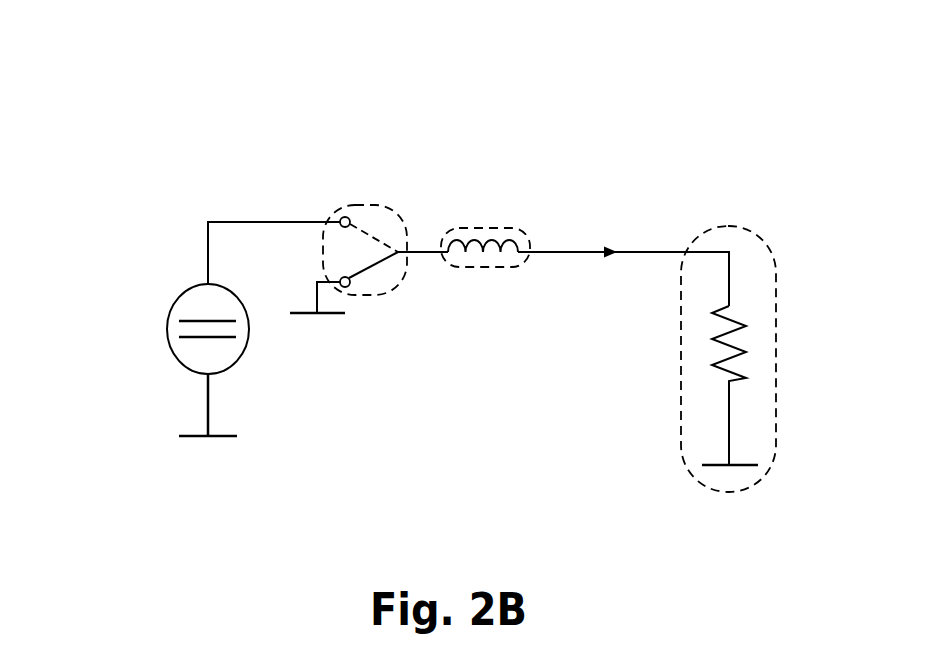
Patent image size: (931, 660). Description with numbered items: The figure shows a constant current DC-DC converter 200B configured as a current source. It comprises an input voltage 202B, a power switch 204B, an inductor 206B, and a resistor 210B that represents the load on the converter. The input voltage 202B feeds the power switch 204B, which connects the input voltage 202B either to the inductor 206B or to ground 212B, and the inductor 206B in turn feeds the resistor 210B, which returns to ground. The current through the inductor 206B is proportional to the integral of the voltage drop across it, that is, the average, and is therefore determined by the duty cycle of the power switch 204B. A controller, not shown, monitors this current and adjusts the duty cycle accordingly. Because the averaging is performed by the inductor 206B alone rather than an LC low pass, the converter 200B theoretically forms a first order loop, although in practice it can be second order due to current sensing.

The constant current DC-DC converter 200B is at (123, 63).
The input voltage 202B is at (181, 292).
The power switch 204B is at (380, 208).
The inductor 206B is at (513, 228).
The resistor 210B is at (733, 225).
The ground 212B is at (332, 317).